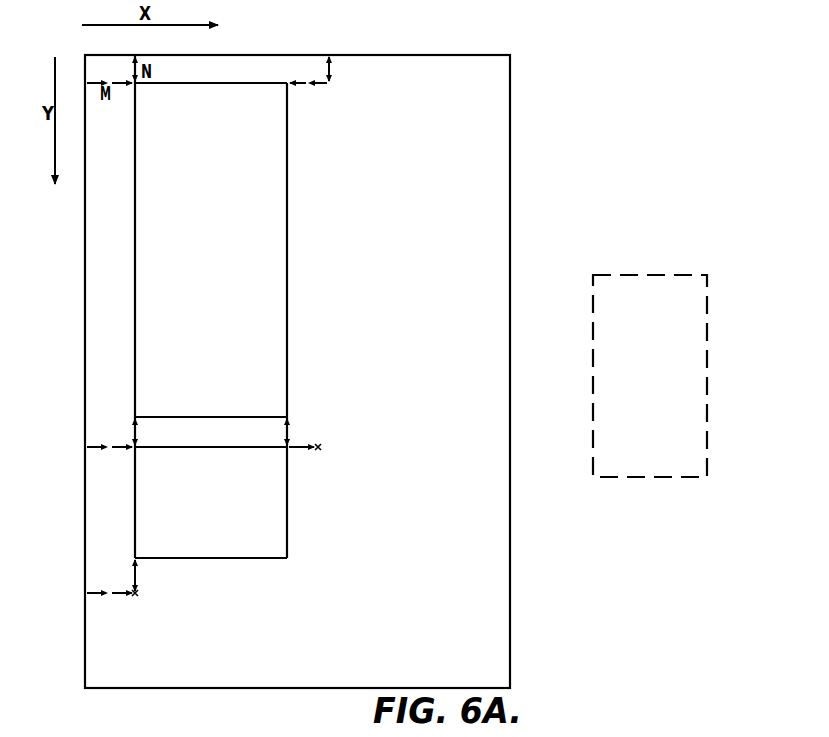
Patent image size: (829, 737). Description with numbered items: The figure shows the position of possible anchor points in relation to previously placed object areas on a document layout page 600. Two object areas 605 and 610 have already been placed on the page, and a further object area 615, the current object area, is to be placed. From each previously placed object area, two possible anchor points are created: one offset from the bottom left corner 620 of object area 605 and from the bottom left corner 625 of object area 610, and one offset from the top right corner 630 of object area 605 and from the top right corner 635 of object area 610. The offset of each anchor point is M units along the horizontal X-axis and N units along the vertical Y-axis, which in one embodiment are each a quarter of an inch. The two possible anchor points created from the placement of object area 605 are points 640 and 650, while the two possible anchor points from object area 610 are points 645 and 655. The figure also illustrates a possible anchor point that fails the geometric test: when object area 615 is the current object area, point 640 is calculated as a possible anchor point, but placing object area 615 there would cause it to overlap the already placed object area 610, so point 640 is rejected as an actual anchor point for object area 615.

The document layout page 600 is at (346, 44).
The object area 605 is at (291, 246).
The object area 610 is at (291, 517).
The object area 615 is at (647, 265).
The bottom left corner 620 is at (137, 415).
The bottom left corner 625 is at (137, 556).
The top right corner 630 is at (287, 86).
The top right corner 635 is at (287, 452).
The possible anchor point 640 is at (137, 450).
The possible anchor point 645 is at (138, 596).
The possible anchor point 650 is at (331, 86).
The possible anchor point 655 is at (322, 448).